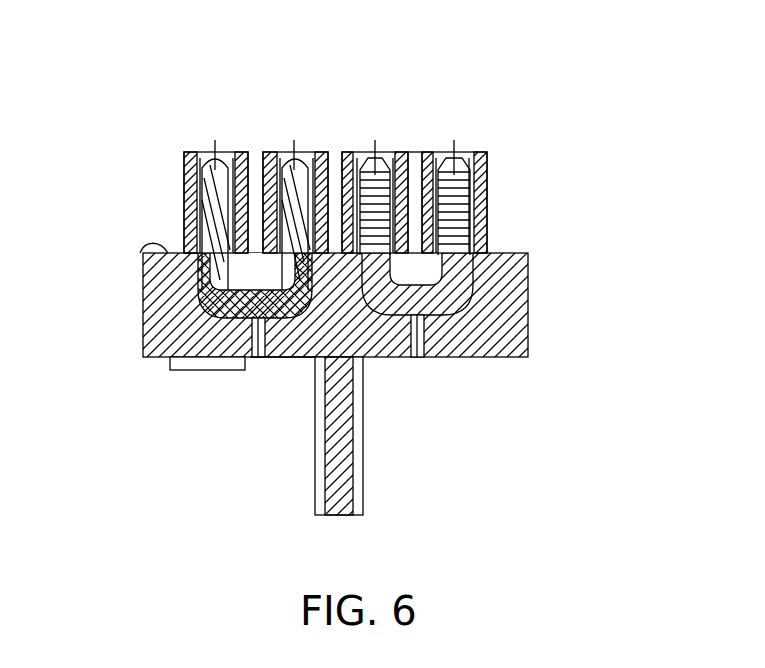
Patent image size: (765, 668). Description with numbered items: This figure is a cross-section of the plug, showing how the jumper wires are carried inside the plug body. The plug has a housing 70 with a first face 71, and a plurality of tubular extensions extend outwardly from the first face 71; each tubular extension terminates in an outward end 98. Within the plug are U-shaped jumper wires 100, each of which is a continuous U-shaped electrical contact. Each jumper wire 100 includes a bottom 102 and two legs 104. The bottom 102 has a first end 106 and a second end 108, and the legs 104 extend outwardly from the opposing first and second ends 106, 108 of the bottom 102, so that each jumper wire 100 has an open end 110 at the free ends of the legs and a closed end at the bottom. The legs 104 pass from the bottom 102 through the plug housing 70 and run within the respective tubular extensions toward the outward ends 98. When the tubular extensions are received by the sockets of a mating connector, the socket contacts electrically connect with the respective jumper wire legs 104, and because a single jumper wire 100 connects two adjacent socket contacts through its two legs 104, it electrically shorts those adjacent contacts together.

The housing 70 is at (508, 357).
The first face 71 is at (152, 245).
The outward end 98 is at (190, 152).
The jumper wire 100 is at (210, 288).
The bottom 102 is at (218, 360).
The legs 104 is at (228, 152).
The first end 106 is at (225, 302).
The second end 108 is at (292, 358).
The open end 110 is at (415, 148).